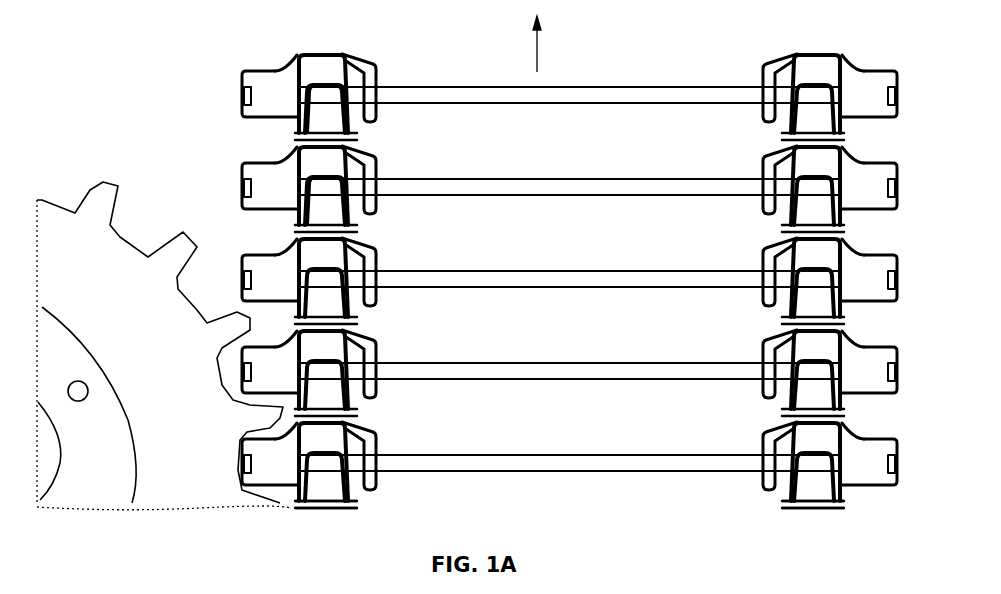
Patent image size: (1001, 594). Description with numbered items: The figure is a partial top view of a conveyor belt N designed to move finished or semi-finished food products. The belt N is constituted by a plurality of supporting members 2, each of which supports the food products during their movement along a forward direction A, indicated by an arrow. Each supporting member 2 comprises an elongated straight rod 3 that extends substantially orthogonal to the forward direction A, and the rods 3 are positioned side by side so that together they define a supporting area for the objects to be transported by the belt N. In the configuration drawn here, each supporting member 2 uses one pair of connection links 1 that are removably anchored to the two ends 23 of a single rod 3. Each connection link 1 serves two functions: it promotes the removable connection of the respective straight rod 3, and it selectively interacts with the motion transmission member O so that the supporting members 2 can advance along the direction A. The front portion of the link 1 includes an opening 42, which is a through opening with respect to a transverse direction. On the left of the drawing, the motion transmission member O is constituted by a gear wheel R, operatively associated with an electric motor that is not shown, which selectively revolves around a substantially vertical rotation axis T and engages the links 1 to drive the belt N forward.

The connection link 1 is at (240, 180).
The supporting member 2 is at (603, 87).
The straight rod 3 is at (523, 103).
The opening 42 is at (335, 119).
The ends of the rod 23 is at (292, 497).
The gear wheel R is at (104, 183).
The motion transmission member O is at (115, 483).
The rotation axis T is at (28, 467).
The forward direction A is at (539, 60).
The conveyor belt N is at (693, 52).